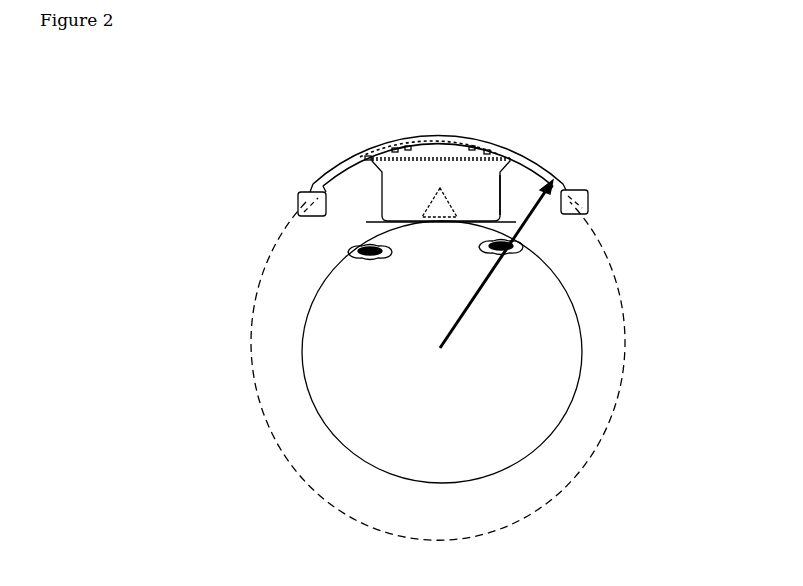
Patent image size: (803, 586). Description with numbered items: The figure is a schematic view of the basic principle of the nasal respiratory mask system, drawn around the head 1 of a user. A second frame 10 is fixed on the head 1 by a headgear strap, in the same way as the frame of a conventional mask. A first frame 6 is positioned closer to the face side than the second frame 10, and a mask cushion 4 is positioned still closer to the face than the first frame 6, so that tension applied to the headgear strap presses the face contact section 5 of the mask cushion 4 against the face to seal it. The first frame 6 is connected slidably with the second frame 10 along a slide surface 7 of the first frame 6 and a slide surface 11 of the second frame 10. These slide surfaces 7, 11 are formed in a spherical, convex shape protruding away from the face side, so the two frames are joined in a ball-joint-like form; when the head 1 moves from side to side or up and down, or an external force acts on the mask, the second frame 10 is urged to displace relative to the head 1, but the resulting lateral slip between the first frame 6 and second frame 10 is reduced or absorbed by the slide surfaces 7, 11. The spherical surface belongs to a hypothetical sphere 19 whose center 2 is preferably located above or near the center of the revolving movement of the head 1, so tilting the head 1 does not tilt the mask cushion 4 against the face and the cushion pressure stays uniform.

The head of user 1 is at (582, 358).
The center of slide surface of mask cushion 2 is at (438, 347).
The mask cushion 4 is at (499, 188).
The face contact section of mask cushion 5 is at (500, 227).
The first frame 6 is at (497, 158).
The slide surface of first frame 7 is at (398, 150).
The second frame 10 is at (453, 140).
The slide surface of second frame 11 is at (375, 150).
The hypothetical sphere 19 is at (255, 297).